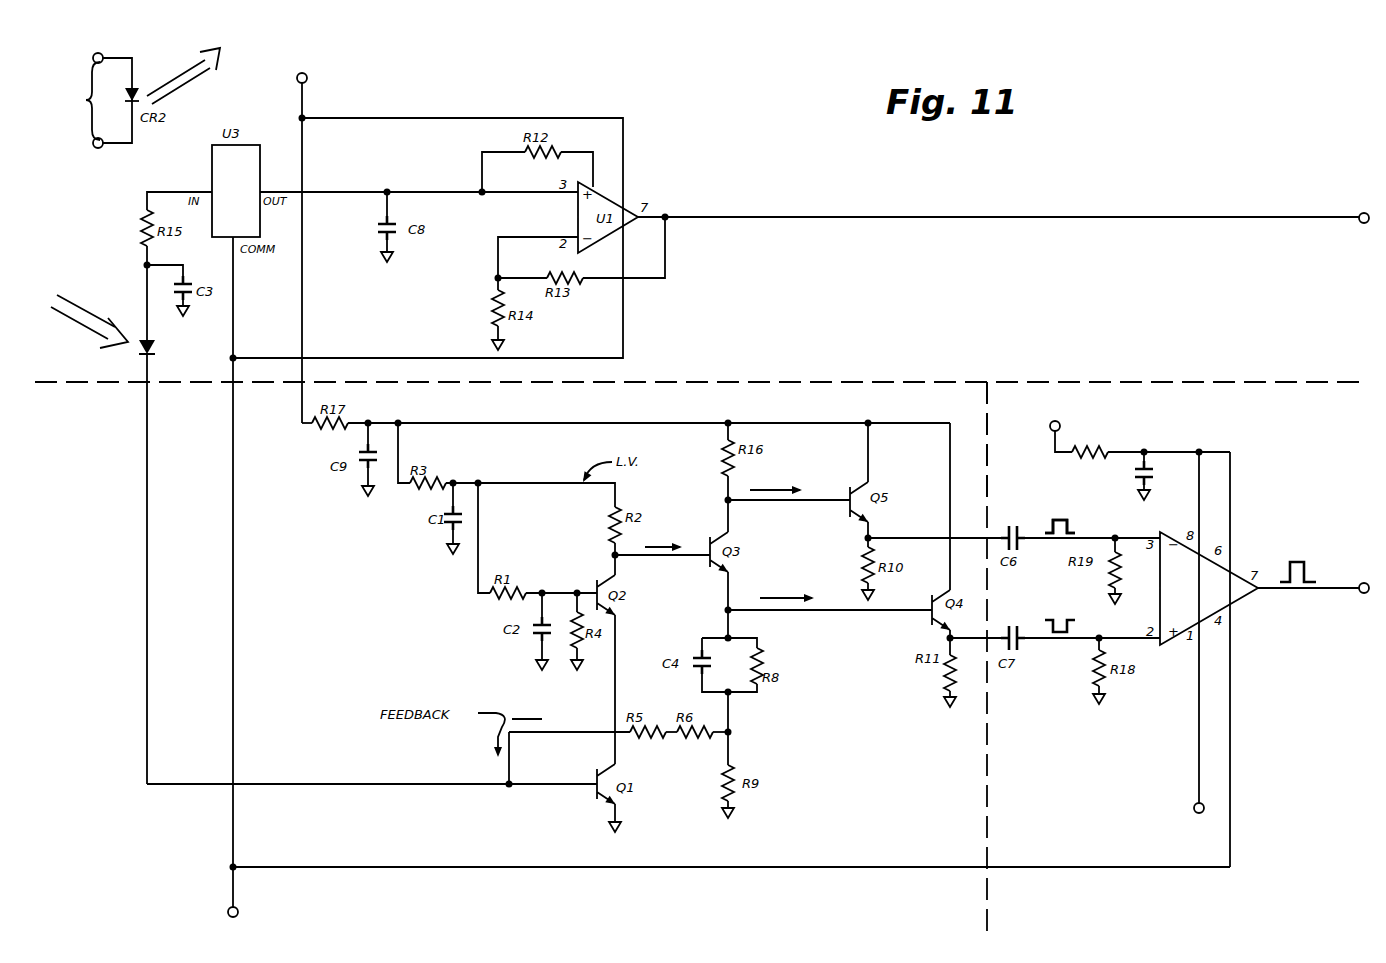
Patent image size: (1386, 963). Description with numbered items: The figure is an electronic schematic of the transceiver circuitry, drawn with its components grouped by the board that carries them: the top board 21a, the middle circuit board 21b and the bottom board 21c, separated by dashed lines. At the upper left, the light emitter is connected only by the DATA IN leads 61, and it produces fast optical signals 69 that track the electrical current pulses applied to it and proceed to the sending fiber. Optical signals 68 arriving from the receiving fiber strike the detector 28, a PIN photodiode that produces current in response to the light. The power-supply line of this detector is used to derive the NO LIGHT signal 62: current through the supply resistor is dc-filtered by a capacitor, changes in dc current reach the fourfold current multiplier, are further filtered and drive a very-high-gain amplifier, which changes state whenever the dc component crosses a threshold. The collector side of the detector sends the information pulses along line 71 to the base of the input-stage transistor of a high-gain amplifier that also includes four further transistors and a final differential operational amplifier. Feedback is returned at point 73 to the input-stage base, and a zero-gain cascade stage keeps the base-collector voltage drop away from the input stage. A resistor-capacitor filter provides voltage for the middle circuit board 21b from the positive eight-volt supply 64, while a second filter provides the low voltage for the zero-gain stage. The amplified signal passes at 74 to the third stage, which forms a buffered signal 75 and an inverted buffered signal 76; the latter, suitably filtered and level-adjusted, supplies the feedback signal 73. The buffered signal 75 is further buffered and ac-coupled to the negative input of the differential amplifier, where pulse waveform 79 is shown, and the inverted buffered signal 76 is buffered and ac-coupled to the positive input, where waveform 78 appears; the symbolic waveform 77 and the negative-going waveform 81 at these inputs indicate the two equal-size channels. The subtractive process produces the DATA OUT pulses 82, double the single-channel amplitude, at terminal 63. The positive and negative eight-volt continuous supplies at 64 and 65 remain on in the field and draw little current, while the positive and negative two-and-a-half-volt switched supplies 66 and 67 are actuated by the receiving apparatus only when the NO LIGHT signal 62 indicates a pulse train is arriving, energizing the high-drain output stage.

The DATA IN leads 61 is at (86, 100).
The optical signals 69 is at (178, 82).
The optical signals 68 is at (56, 322).
The detector 28 is at (176, 562).
The positive 8 V supply 64 is at (306, 84).
The NO LIGHT signal 62 is at (1359, 212).
The negative 8 V supply 65 is at (238, 909).
The positive 2.5 V switched supply 66 is at (1051, 430).
The negative 2.5 V switched supply 67 is at (1193, 805).
The terminal 63 is at (1360, 582).
The feedback line 71 is at (393, 786).
The feedback signal 73 is at (511, 757).
The amplified signal 74 is at (709, 557).
The buffered signal 75 is at (827, 495).
The inverted buffered signal 76 is at (835, 607).
The pulse waveform at comparator inverting input 77 is at (1090, 538).
The waveform 79 is at (1068, 519).
The negative pulse waveform 81 is at (1064, 628).
The waveform 78 is at (1078, 640).
The DATA OUT pulses 82 is at (1302, 562).
The top board 21a is at (700, 371).
The middle circuit board 21b is at (848, 658).
The bottom board 21c is at (1078, 441).